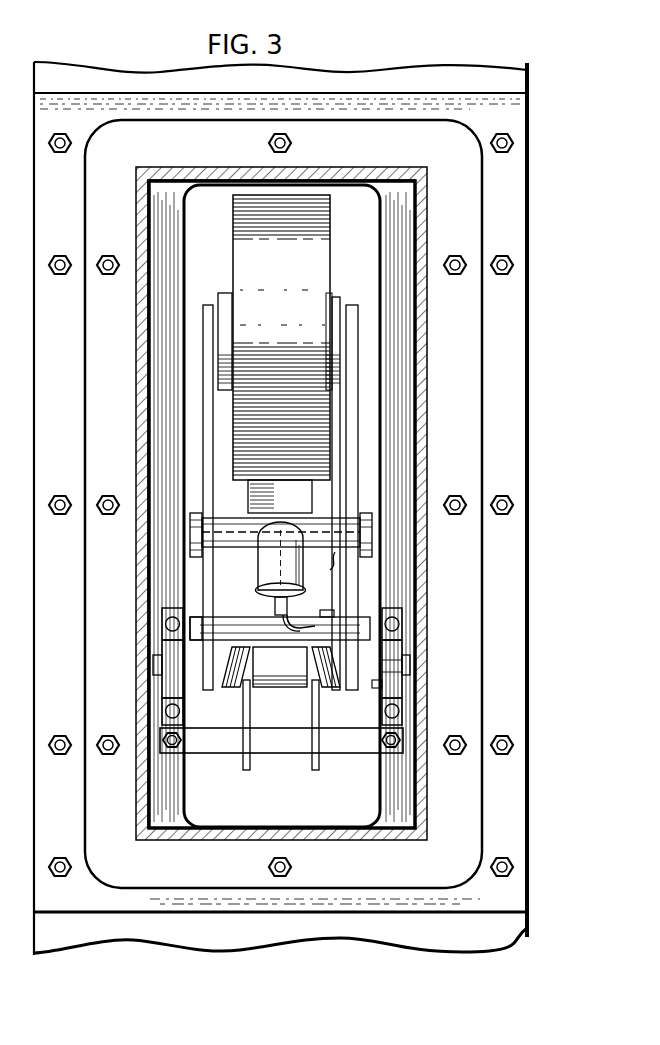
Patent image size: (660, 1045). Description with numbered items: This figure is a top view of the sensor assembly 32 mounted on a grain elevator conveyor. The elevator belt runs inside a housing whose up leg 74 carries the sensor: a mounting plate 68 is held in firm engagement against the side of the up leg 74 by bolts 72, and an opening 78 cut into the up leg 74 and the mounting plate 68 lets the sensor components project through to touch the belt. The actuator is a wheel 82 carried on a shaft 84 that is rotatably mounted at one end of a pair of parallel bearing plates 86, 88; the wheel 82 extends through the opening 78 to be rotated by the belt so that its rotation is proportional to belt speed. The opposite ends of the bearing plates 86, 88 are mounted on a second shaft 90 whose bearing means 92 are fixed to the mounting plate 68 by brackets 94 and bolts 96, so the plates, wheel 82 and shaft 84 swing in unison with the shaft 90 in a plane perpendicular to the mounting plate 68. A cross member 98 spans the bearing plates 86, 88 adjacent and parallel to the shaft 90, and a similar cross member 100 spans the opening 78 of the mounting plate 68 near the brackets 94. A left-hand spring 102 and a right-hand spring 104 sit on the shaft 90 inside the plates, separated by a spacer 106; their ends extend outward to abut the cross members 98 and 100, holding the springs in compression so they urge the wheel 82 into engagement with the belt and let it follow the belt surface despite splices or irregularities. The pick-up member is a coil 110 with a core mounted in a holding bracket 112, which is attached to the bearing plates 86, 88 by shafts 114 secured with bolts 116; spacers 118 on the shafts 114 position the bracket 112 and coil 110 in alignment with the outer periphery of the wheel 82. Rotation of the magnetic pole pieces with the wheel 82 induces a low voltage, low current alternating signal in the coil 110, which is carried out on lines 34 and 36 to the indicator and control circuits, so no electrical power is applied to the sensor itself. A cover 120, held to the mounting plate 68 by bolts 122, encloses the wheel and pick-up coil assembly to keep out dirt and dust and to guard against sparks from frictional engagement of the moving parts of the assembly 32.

The sensor assembly 32 is at (557, 295).
The line 34 is at (286, 618).
The line 36 is at (331, 612).
The mounting plate 68 is at (529, 590).
The bolts 72 is at (512, 497).
The up leg 74 is at (515, 925).
The opening 78 is at (383, 215).
The wheel 82 is at (241, 236).
The shaft 84 is at (343, 320).
The bearing plate 86 is at (209, 307).
The bearing plate 88 is at (360, 337).
The shaft 90 is at (410, 661).
The bearing means 92 is at (403, 683).
The brackets 94 is at (403, 641).
The bolts 96 is at (397, 622).
The cross member 98 is at (227, 622).
The cross member 100 is at (239, 765).
The left-hand spring 102 is at (194, 743).
The right-hand spring 104 is at (365, 743).
The spacer 106 is at (280, 690).
The coil 110 is at (258, 575).
The holding bracket 112 is at (248, 507).
The shafts 114 is at (327, 520).
The bolts 116 is at (368, 522).
The spacers 118 is at (335, 552).
The cover 120 is at (421, 787).
The bolts 122 is at (449, 736).